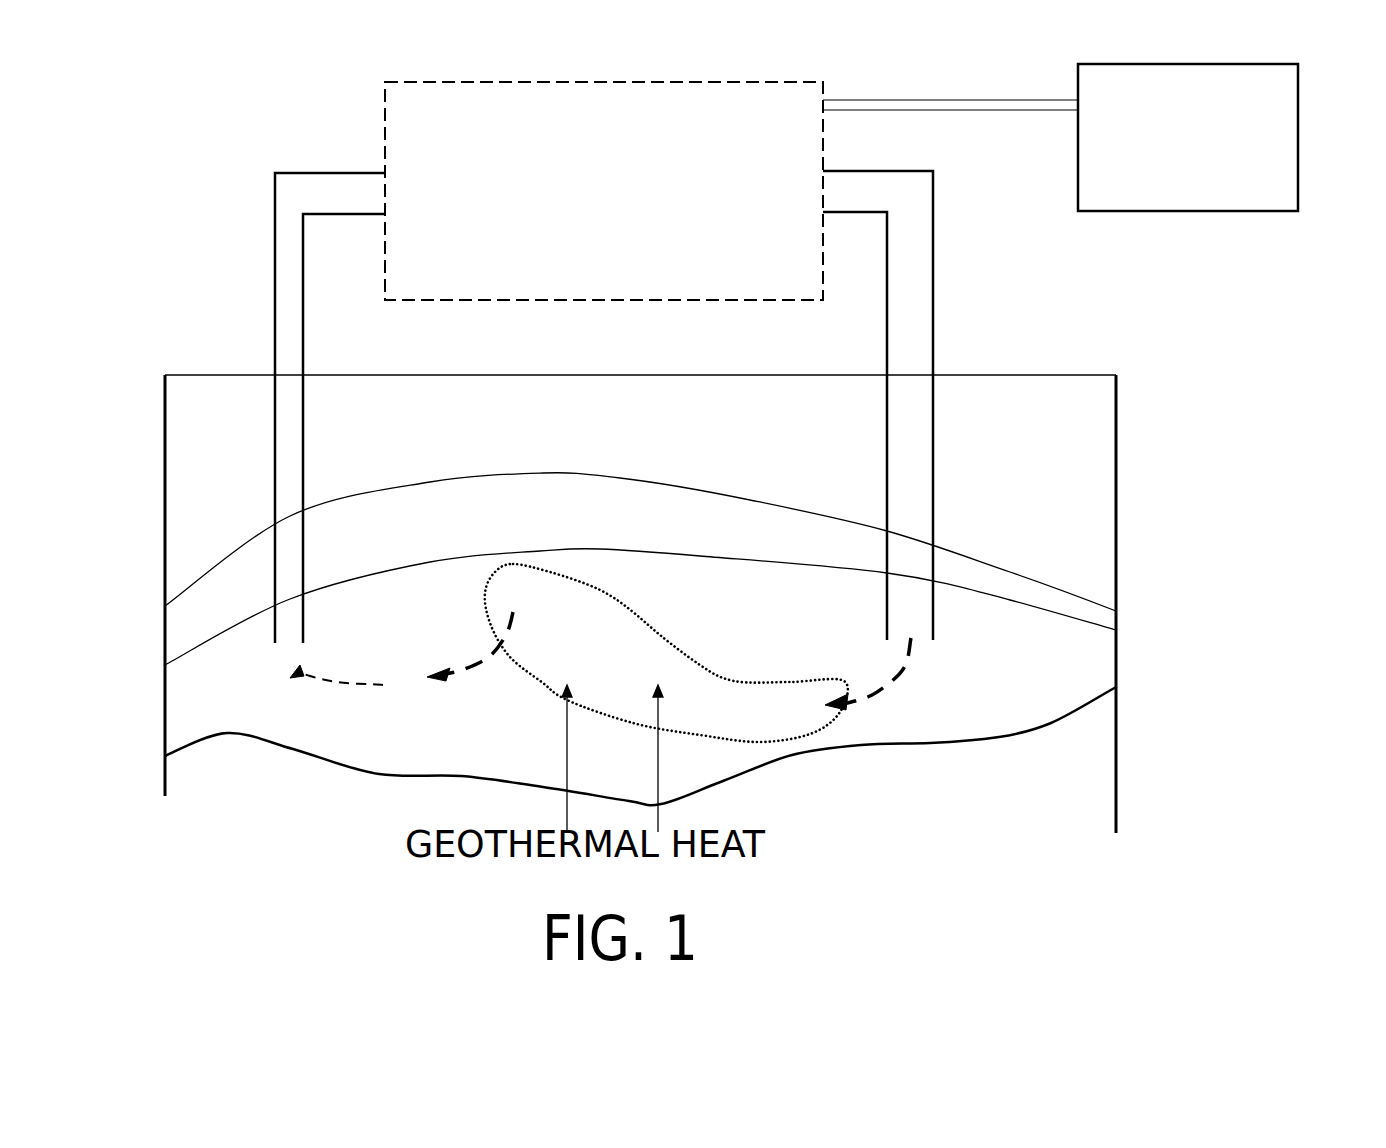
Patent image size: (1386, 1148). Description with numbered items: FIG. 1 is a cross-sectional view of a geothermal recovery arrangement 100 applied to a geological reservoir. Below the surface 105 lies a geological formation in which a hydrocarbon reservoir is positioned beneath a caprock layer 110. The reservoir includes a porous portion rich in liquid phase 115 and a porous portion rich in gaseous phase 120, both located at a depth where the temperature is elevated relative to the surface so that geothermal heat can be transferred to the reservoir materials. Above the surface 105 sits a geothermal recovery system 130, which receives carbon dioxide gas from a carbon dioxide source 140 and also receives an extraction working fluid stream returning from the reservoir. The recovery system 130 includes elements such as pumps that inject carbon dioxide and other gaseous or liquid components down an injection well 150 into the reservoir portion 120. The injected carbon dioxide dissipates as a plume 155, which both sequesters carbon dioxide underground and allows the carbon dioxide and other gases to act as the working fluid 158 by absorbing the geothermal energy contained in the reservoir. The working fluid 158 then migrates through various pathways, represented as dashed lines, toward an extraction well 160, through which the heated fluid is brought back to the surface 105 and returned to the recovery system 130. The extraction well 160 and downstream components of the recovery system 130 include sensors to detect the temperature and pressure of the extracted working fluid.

The geothermal energy recovery system 100 is at (222, 117).
The surface 105 is at (1078, 373).
The caprock layer 110 is at (468, 534).
The porous portion rich in liquid phase 115 is at (318, 811).
The porous portion rich in gaseous phase 120 is at (497, 736).
The geothermal recovery system 130 is at (383, 118).
The carbon dioxide source 140 is at (1335, 155).
The injection well 150 is at (933, 337).
The plume 155 is at (669, 653).
The working fluid 158 is at (336, 665).
The extraction well 160 is at (273, 338).